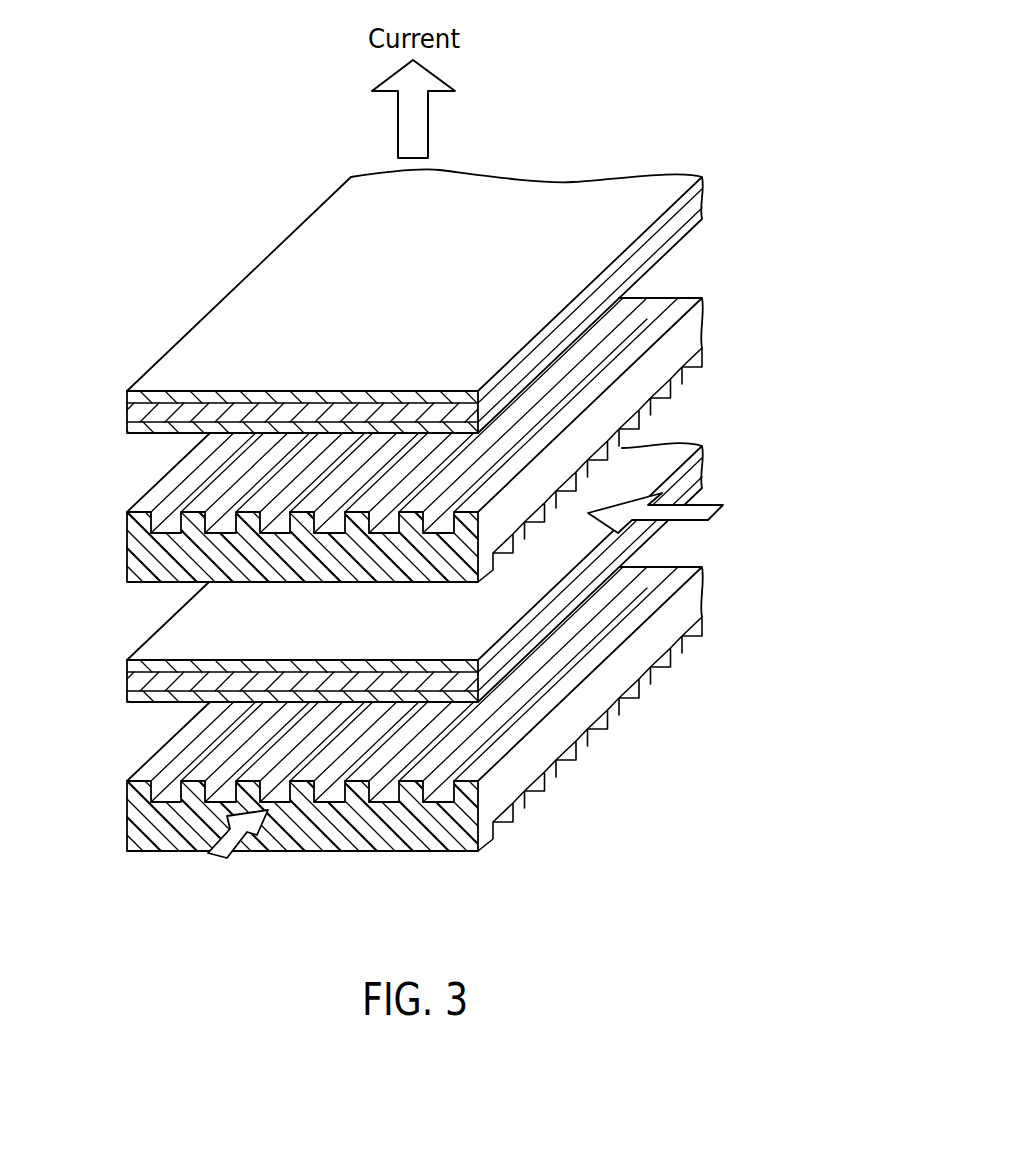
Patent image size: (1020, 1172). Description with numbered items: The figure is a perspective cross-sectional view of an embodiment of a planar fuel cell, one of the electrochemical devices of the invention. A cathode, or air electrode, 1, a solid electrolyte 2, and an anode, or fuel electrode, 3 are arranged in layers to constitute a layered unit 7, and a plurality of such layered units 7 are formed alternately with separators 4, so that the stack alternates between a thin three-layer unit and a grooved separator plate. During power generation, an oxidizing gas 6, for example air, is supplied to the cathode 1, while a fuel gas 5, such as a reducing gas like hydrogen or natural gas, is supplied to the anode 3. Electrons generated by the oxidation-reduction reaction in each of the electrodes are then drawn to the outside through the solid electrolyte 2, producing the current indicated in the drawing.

The cathode (air electrode) 1 is at (128, 396).
The solid electrolyte 2 is at (128, 413).
The anode (fuel electrode) 3 is at (274, 441).
The separator 4 is at (128, 553).
The fuel gas 5 is at (243, 833).
The oxidizing gas 6 is at (695, 512).
The layered unit 7 is at (368, 318).